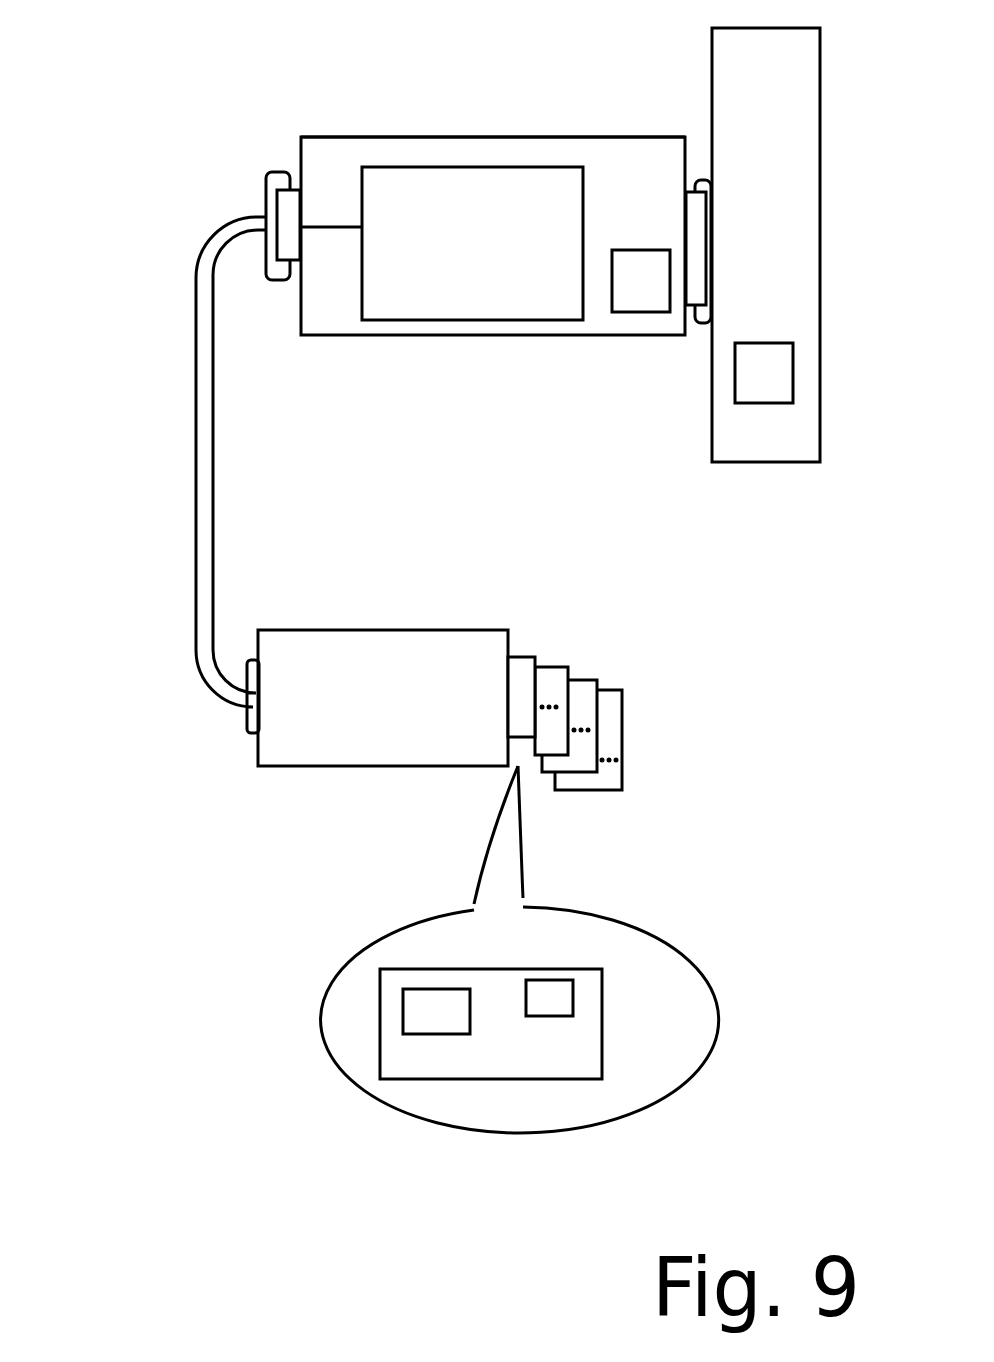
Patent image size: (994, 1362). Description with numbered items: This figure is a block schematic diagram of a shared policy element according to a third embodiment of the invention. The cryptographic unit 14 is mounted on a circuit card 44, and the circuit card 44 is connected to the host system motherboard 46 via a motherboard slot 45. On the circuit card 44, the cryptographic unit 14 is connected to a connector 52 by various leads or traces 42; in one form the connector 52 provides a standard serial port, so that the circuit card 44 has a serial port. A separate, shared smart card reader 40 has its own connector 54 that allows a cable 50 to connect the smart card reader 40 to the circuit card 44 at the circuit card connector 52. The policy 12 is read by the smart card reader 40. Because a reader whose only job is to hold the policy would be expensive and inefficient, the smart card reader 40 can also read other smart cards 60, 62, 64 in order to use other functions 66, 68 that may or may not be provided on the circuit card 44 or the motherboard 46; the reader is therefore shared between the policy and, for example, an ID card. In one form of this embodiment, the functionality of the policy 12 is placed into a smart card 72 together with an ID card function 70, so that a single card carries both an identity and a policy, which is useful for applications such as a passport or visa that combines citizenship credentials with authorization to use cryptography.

The policy 12 is at (520, 737).
The cryptographic unit 14 is at (452, 190).
The shared smart card reader 40 is at (348, 750).
The leads or traces 42 is at (336, 226).
The circuit card 44 is at (613, 163).
The motherboard slot 45 is at (705, 181).
The host system motherboard 46 is at (745, 452).
The cable 50 is at (193, 420).
The connector 52 is at (270, 172).
The connector 54 is at (247, 723).
The smart card 60 is at (555, 667).
The smart card 62 is at (585, 687).
The smart card 64 is at (615, 715).
The function 66 is at (630, 312).
The function 68 is at (787, 373).
The ID card function 70 is at (445, 1021).
The smart card 72 is at (517, 1049).